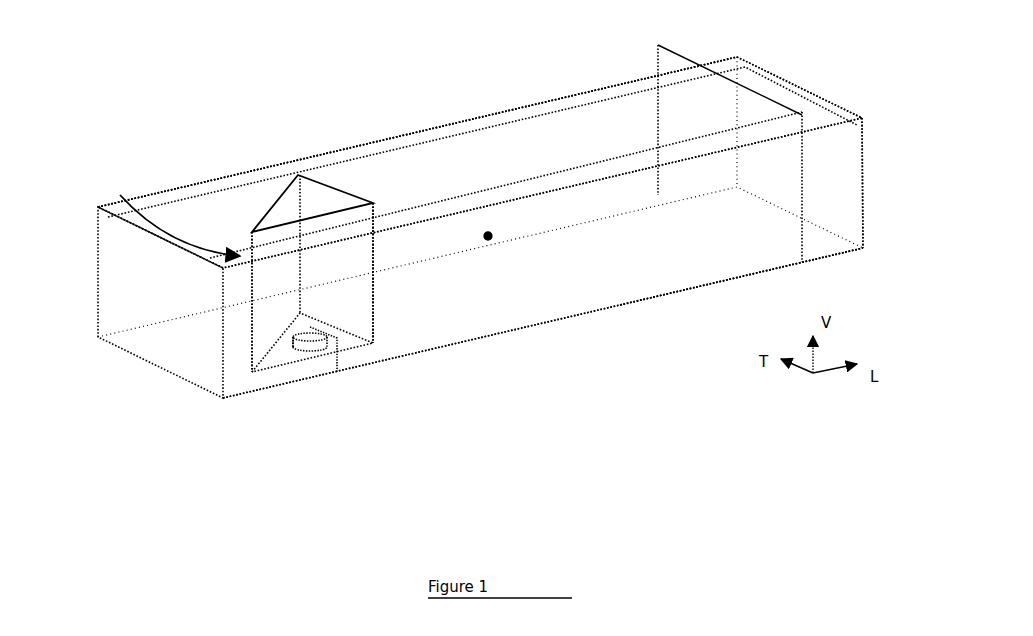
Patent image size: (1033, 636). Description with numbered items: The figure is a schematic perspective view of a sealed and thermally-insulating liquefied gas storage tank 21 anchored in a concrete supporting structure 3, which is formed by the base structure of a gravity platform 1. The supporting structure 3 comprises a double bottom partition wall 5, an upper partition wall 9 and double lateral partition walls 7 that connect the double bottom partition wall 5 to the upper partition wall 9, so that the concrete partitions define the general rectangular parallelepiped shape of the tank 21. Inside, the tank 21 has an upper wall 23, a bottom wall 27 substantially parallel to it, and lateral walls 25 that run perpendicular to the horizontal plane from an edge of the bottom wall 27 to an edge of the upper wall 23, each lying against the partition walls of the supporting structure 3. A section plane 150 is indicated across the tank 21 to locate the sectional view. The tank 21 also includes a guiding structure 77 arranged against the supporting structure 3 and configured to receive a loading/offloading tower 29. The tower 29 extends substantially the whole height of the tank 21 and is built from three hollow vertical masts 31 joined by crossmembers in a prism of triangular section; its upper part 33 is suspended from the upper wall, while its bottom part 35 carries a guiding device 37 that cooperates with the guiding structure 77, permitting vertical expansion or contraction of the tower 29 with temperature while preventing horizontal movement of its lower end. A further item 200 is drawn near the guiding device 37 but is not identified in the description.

The gravity platform 1 is at (242, 58).
The supporting structure 3 is at (496, 130).
The double bottom partition wall 5 is at (463, 328).
The double lateral partition walls 7 is at (128, 273).
The upper partition wall 9 is at (220, 207).
The liquefied gas storage tank 21 is at (487, 233).
The upper wall 23 is at (613, 108).
The lateral walls 25 is at (852, 215).
The bottom wall 27 is at (688, 277).
The loading/offloading tower 29 is at (281, 187).
The vertical masts 31 is at (373, 203).
The upper part 33 is at (171, 215).
The bottom part 35 is at (377, 320).
The guiding device 37 is at (295, 343).
The guiding structure 77 is at (303, 352).
The section plane 150 is at (674, 53).
The sensor 200 is at (330, 352).